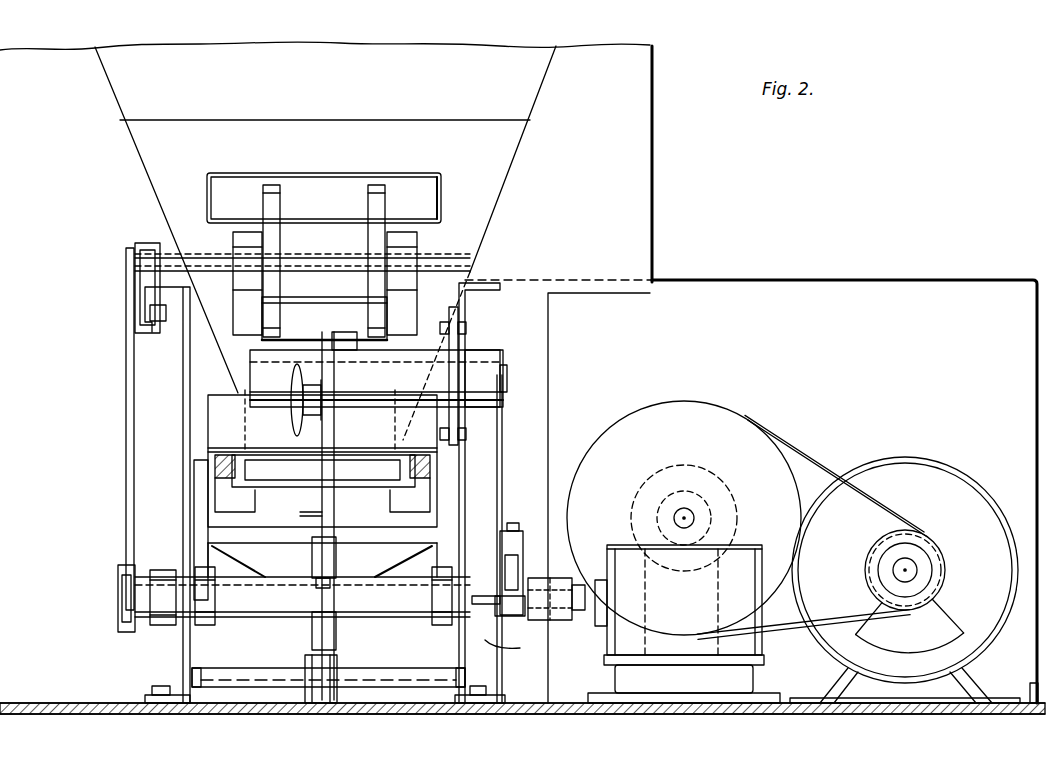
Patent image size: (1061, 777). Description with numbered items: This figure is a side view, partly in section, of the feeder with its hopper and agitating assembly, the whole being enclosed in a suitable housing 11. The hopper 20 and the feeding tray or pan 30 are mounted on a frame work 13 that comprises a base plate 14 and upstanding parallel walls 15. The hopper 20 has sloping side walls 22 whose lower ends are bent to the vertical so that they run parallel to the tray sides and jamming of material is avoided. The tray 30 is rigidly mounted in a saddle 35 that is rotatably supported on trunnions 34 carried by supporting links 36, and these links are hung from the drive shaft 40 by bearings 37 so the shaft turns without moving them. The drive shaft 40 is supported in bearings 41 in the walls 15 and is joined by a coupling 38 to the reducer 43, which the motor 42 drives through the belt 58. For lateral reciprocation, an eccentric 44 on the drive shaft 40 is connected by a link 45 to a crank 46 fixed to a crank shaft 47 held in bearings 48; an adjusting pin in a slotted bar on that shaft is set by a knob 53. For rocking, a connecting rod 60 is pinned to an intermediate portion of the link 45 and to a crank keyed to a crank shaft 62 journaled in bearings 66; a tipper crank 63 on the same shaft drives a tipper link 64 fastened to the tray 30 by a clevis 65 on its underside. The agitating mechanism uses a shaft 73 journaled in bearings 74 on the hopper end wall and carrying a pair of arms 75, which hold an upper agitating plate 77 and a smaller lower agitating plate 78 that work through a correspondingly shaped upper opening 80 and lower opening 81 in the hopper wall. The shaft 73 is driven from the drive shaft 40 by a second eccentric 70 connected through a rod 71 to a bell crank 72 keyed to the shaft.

The housing 11 is at (654, 165).
The frame work 13 is at (183, 358).
The base plate 14 is at (120, 737).
The upstanding parallel walls 15 is at (466, 337).
The hopper 20 is at (104, 72).
The side walls 22 is at (245, 428).
The tray 30 is at (232, 478).
The trunnions 34 is at (447, 478).
The saddle 35 is at (408, 498).
The supporting links 36 is at (197, 523).
The bearings 37 is at (203, 624).
The coupling 38 is at (568, 590).
The drive shaft 40 is at (275, 614).
The bearings 41 is at (160, 627).
The motor 42 is at (920, 462).
The reducer 43 is at (715, 490).
The eccentric 44 is at (522, 548).
The link 45 is at (518, 560).
The crank 46 is at (500, 415).
The crank shaft 47 is at (507, 375).
The bearings 48 is at (400, 407).
The knob 53 is at (291, 410).
The belt 58 is at (795, 452).
The connecting rod 60 is at (500, 645).
The crank shaft 62 is at (356, 668).
The tipper crank 63 is at (336, 714).
The tipper link 64 is at (318, 543).
The clevis 65 is at (320, 514).
The bearings 66 is at (465, 714).
The second eccentric 70 is at (136, 632).
The rod 71 is at (128, 373).
The bell crank 72 is at (138, 266).
The shaft 73 is at (203, 257).
The bearings 74 is at (418, 247).
The arms 75 is at (372, 200).
The upper agitating plate 77 is at (417, 185).
The lower agitating plate 78 is at (332, 330).
The upper opening 80 is at (291, 182).
The lower opening 81 is at (282, 338).